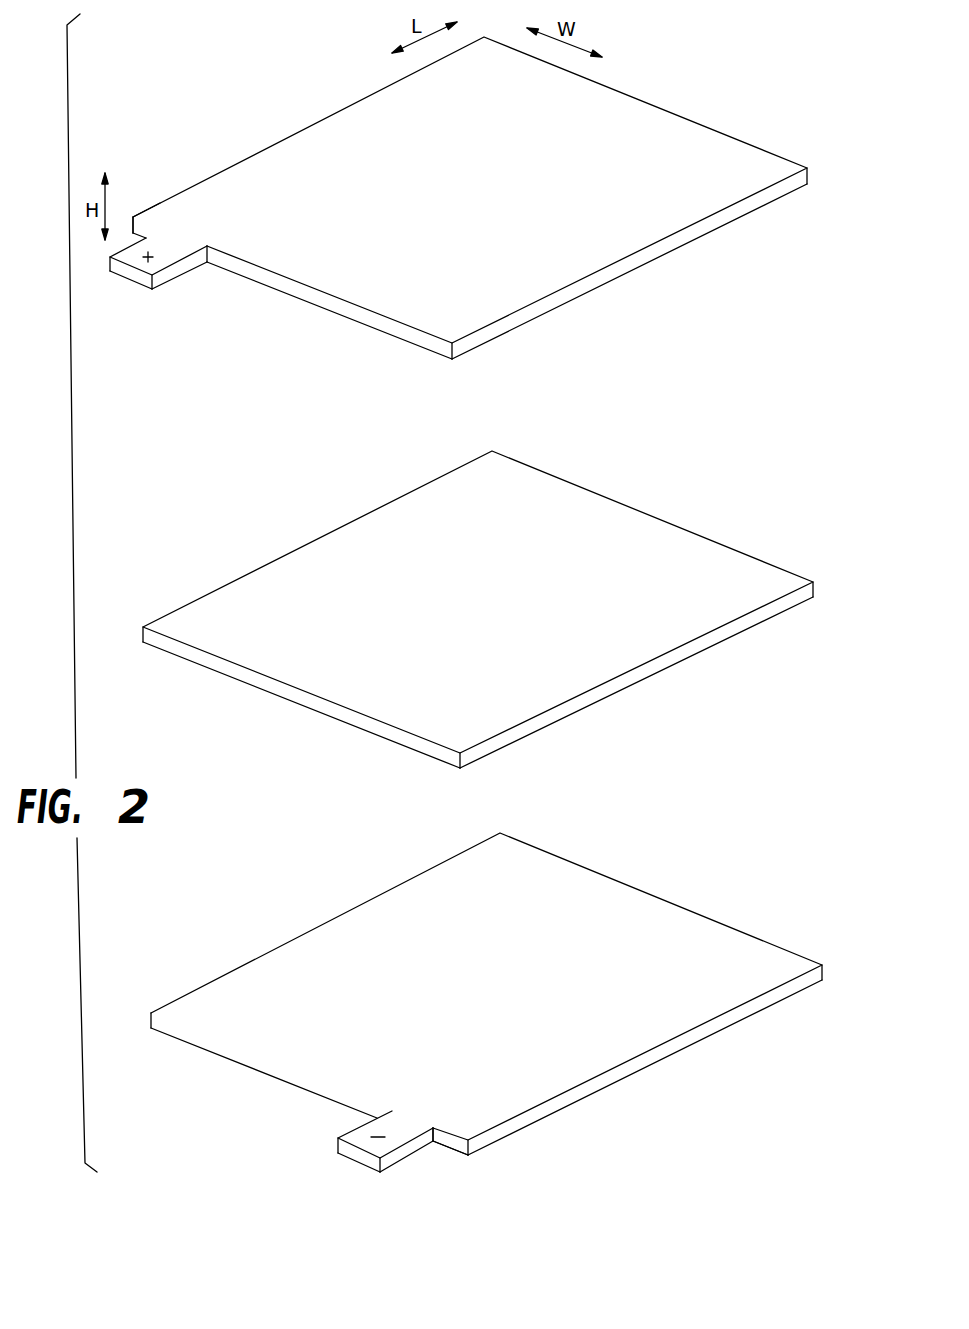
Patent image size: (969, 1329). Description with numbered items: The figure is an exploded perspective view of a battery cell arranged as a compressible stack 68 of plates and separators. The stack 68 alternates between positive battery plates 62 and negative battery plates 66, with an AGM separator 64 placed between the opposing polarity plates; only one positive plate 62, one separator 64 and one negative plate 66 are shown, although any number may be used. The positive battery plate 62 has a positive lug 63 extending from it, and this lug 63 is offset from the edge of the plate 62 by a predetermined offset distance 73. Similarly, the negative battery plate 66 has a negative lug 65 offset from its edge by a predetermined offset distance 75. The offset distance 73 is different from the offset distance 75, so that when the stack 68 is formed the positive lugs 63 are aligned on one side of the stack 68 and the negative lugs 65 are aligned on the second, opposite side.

The positive battery plate 62 is at (678, 220).
The positive lug 63 is at (165, 278).
The AGM separator 64 is at (688, 630).
The negative lug 65 is at (405, 1156).
The negative battery plate 66 is at (697, 1013).
The stack 68 is at (485, 617).
The offset distance 73 is at (150, 219).
The offset distance 75 is at (455, 1132).